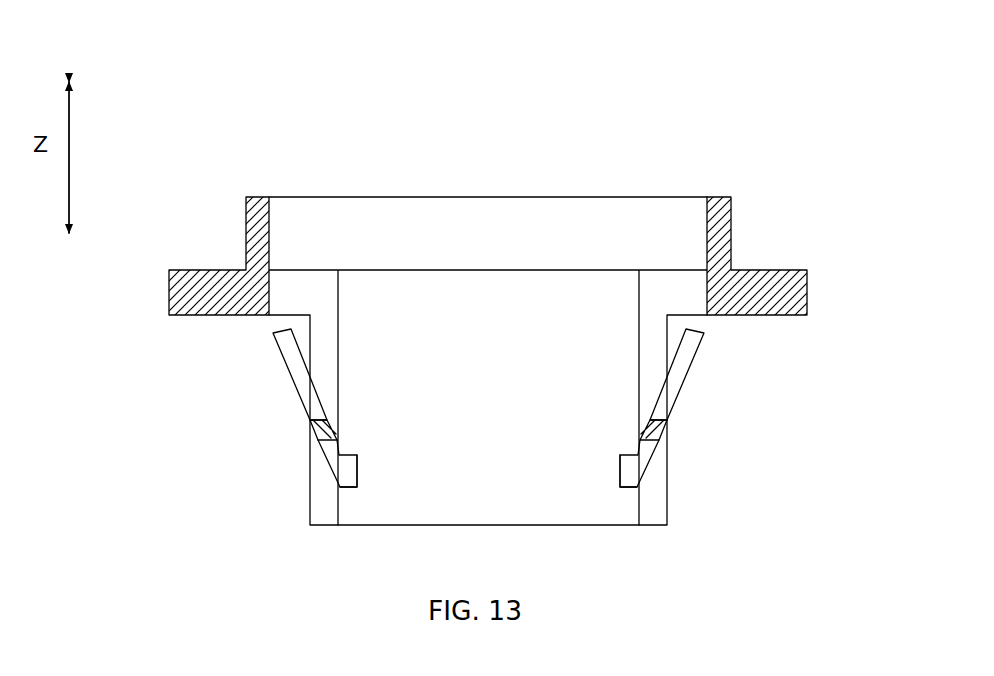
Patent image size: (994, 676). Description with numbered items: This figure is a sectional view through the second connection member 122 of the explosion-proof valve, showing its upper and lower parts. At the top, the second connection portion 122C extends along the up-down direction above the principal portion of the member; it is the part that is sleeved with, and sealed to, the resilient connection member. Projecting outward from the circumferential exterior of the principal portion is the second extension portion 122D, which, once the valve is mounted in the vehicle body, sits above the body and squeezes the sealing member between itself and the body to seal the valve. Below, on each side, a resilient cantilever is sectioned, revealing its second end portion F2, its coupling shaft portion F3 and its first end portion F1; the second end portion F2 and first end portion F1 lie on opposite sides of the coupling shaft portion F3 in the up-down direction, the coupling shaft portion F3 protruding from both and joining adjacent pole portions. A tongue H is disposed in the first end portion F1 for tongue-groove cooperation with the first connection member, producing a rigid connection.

The second connection member 122 is at (191, 161).
The second connection portion 122C is at (732, 228).
The second extension portion 122D is at (808, 278).
The second end portion F2 is at (290, 353).
The coupling shaft portion F3 is at (652, 437).
The first end portion F1 is at (333, 455).
The tongue H is at (357, 480).